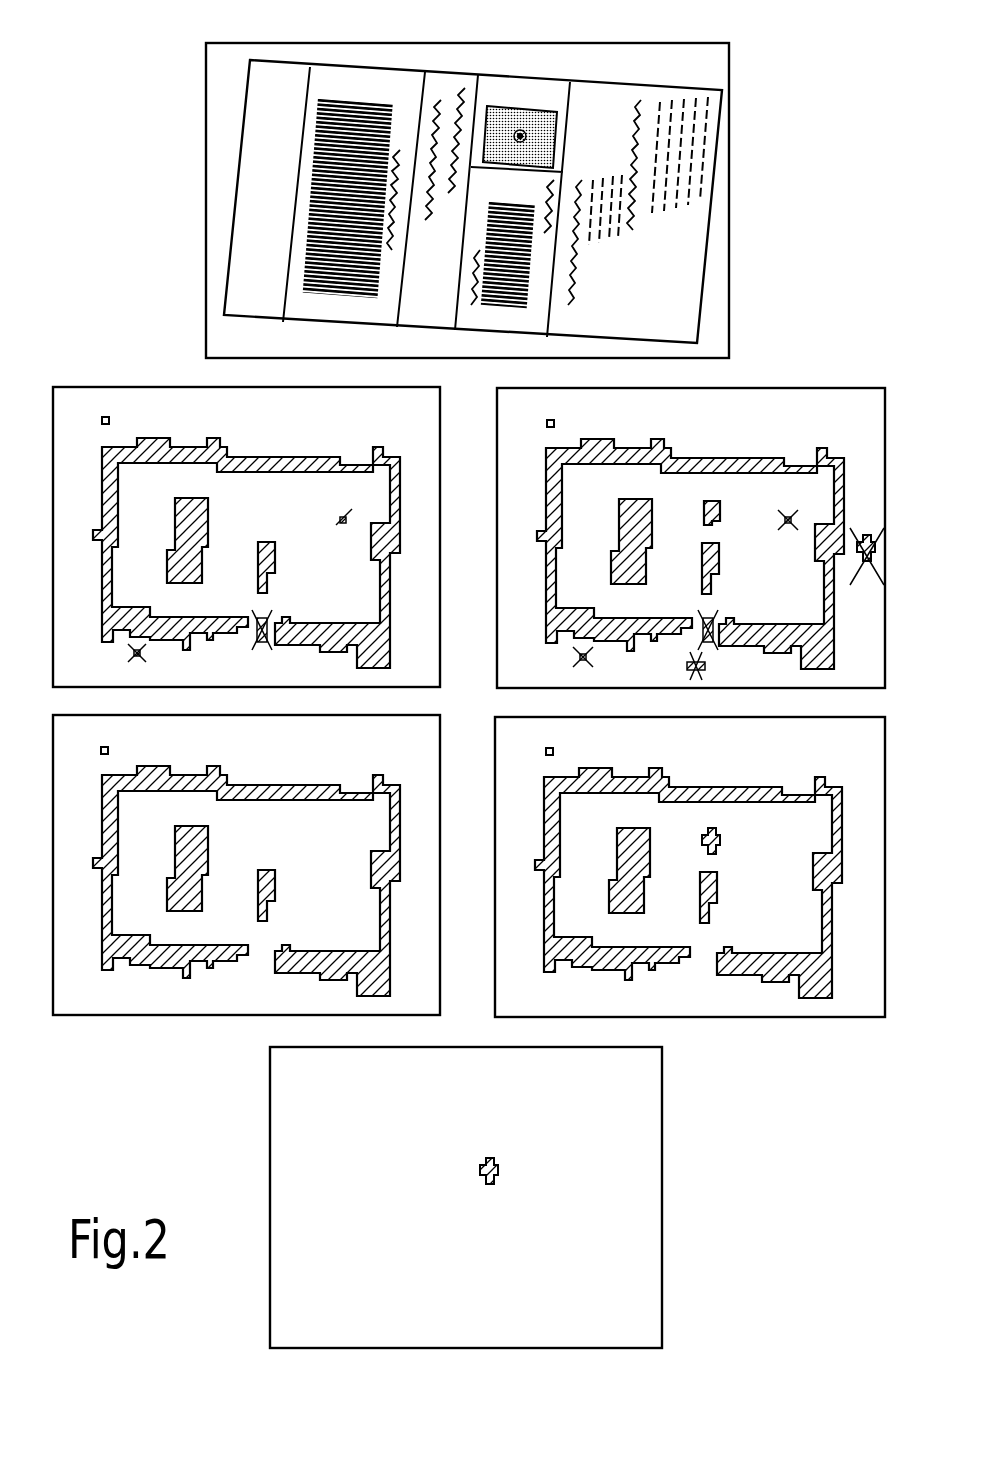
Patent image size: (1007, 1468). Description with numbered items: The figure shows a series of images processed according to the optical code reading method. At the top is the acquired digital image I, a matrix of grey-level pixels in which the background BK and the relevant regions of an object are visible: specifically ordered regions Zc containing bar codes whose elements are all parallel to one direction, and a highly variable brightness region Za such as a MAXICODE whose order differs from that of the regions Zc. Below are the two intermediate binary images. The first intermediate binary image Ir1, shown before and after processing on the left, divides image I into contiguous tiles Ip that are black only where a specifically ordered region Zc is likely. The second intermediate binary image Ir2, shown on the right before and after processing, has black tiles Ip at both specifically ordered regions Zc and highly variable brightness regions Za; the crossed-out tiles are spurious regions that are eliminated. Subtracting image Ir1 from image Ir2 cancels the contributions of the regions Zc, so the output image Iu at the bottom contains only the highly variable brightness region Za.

The digital image I is at (731, 285).
The background BK is at (693, 233).
The specifically ordered region Zc is at (480, 75).
The highly variable brightness region Za is at (553, 100).
The first intermediate binary image Ir1 is at (82, 385).
The second intermediate binary image Ir2 is at (773, 383).
The tile Ip is at (108, 417).
The output image Iu is at (664, 1128).